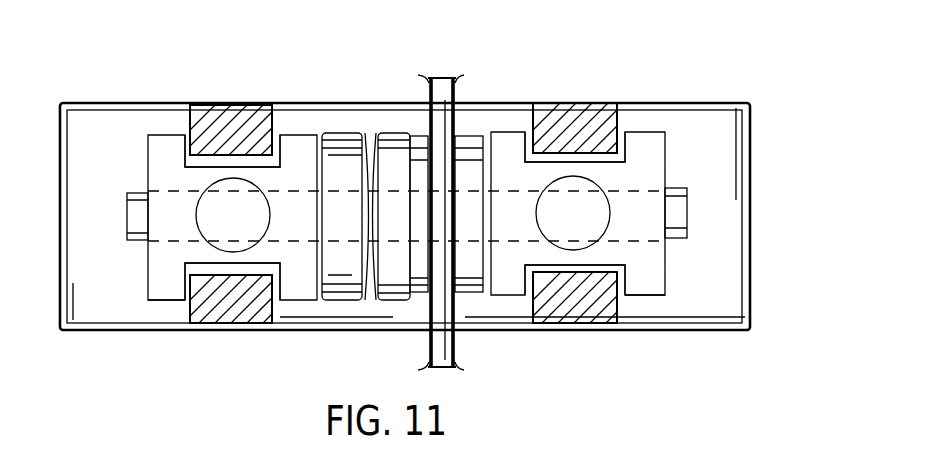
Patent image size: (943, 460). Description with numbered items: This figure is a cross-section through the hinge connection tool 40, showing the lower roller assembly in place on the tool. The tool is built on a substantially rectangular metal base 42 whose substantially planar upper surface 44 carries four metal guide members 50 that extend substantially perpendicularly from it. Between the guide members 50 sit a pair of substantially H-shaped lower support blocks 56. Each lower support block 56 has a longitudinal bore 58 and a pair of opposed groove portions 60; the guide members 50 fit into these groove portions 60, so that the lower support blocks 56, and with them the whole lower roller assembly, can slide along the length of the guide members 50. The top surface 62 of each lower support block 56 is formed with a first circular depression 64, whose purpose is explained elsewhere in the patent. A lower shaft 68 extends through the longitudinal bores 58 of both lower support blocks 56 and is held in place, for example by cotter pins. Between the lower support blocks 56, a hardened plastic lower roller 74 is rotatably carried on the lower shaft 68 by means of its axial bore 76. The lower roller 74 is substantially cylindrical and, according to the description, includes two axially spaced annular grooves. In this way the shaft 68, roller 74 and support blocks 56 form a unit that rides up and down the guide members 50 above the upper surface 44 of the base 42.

The hinge connection tool 40 is at (498, 72).
The base 42 is at (718, 103).
The upper surface 44 is at (725, 170).
The guide members 50 is at (233, 118).
The lower support blocks 56 is at (148, 300).
The longitudinal bore 58 is at (160, 190).
The groove portions 60 is at (197, 130).
The top surface 62 is at (160, 265).
The first circular depression 64 is at (250, 188).
The lower shaft 68 is at (686, 219).
The lower roller 74 is at (337, 290).
The axial bore 76 is at (337, 190).